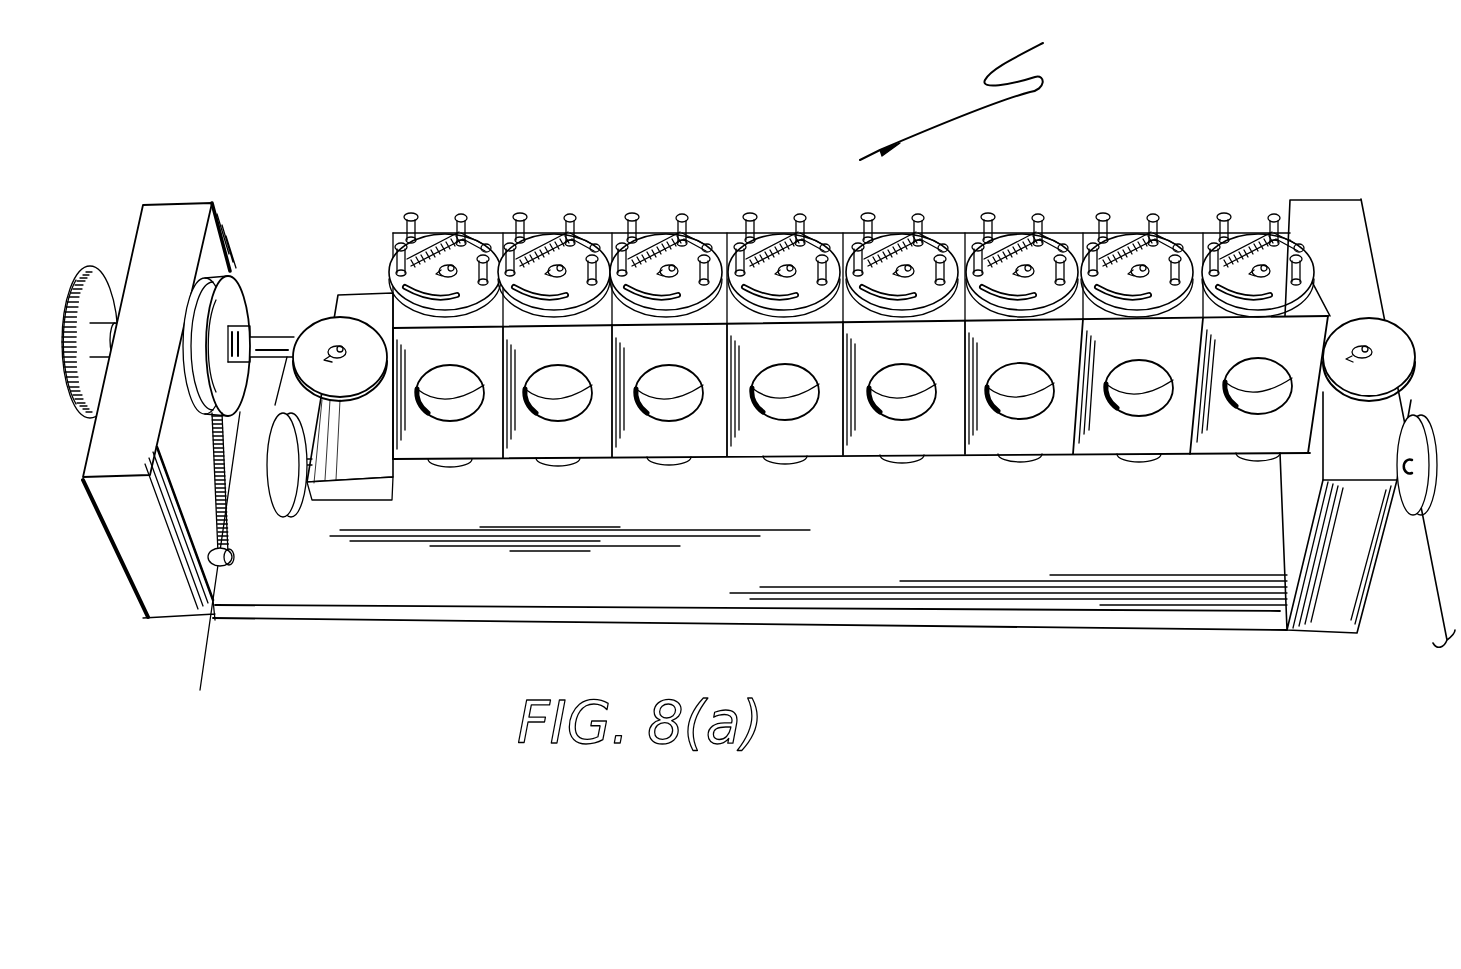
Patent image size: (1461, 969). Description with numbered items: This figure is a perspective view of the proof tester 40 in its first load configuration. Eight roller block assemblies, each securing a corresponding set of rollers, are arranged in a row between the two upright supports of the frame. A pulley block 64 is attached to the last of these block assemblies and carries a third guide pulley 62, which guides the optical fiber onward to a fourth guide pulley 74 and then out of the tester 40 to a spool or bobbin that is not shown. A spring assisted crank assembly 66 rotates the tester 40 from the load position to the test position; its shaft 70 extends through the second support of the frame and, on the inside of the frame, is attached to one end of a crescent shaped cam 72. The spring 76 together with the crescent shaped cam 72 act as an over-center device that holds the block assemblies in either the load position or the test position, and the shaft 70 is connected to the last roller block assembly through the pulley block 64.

The tester 40 is at (979, 89).
The third guide pulley 62 is at (341, 320).
The pulley block 64 is at (375, 300).
The spring assisted crank assembly 66 is at (88, 268).
The shaft 70 is at (287, 331).
The crescent shaped cam 72 is at (240, 327).
The fourth guide pulley 74 is at (287, 510).
The spring 76 is at (213, 490).